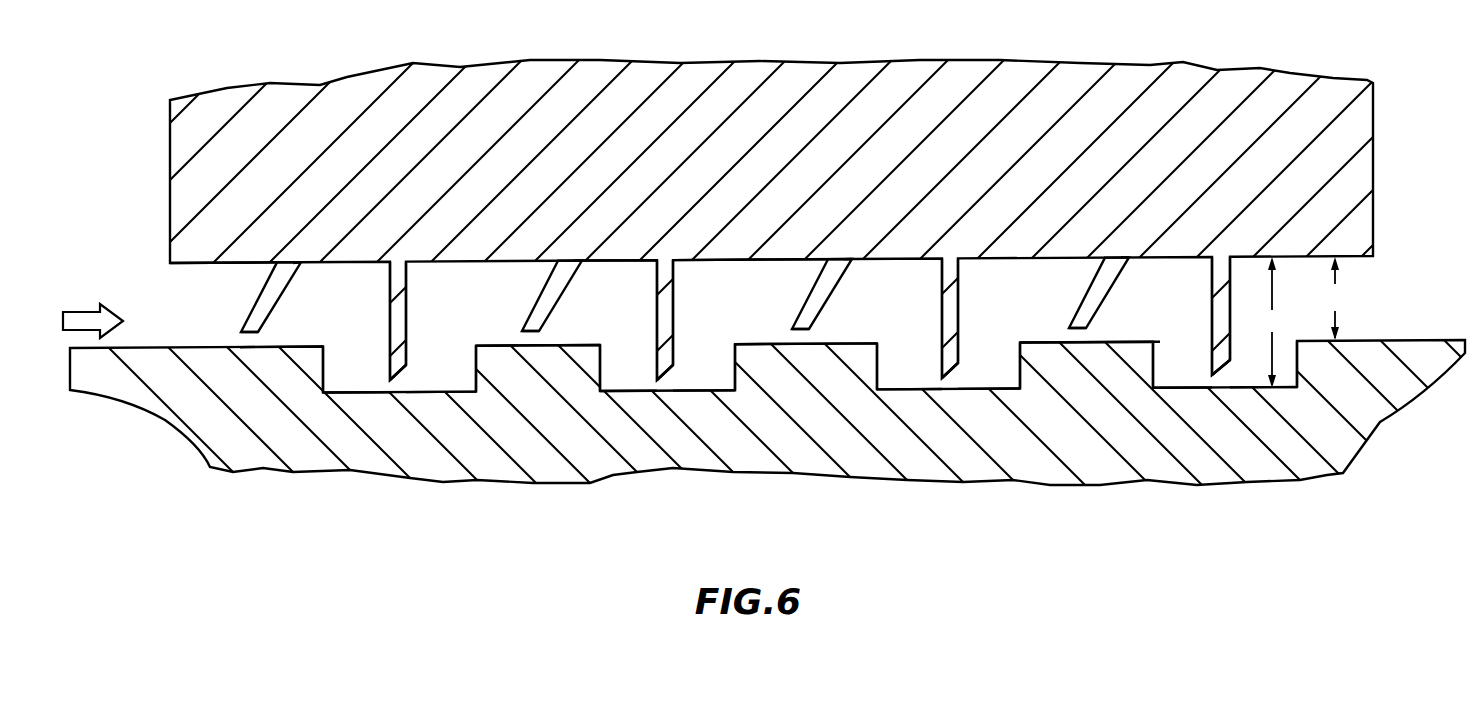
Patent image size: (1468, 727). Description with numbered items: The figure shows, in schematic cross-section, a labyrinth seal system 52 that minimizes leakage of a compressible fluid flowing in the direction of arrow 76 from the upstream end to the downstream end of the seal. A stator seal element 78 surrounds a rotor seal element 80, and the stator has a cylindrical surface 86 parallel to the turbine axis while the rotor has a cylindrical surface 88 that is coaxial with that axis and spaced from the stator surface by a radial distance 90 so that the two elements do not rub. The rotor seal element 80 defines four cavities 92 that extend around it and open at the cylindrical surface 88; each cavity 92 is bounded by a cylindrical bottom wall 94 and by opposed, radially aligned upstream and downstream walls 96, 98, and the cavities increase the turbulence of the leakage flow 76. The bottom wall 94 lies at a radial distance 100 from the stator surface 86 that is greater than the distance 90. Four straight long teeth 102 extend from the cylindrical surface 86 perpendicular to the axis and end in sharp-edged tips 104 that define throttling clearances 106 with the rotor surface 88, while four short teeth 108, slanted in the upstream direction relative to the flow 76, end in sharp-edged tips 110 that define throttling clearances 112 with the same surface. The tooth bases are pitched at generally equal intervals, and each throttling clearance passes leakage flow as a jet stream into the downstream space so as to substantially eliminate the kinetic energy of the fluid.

The seal system 52 is at (150, 92).
The leakage fluid flow 76 is at (80, 308).
The stator seal element 78 is at (1372, 213).
The rotor seal element 80 is at (1372, 428).
The cylindrical surface 86 is at (172, 270).
The cylindrical surface 88 is at (294, 346).
The radial distance 90 is at (1333, 298).
The cavity 92 is at (418, 368).
The cylindrical bottom wall 94 is at (440, 388).
The upstream wall 96 is at (320, 373).
The downstream wall 98 is at (478, 365).
The radial distance 100 is at (1268, 322).
The long tooth 102 is at (406, 284).
The sharp-edged tip 104 is at (389, 378).
The throttling clearance 106 is at (392, 395).
The short tooth 108 is at (293, 268).
The sharp-edged tip 110 is at (250, 318).
The throttling clearance 112 is at (245, 338).